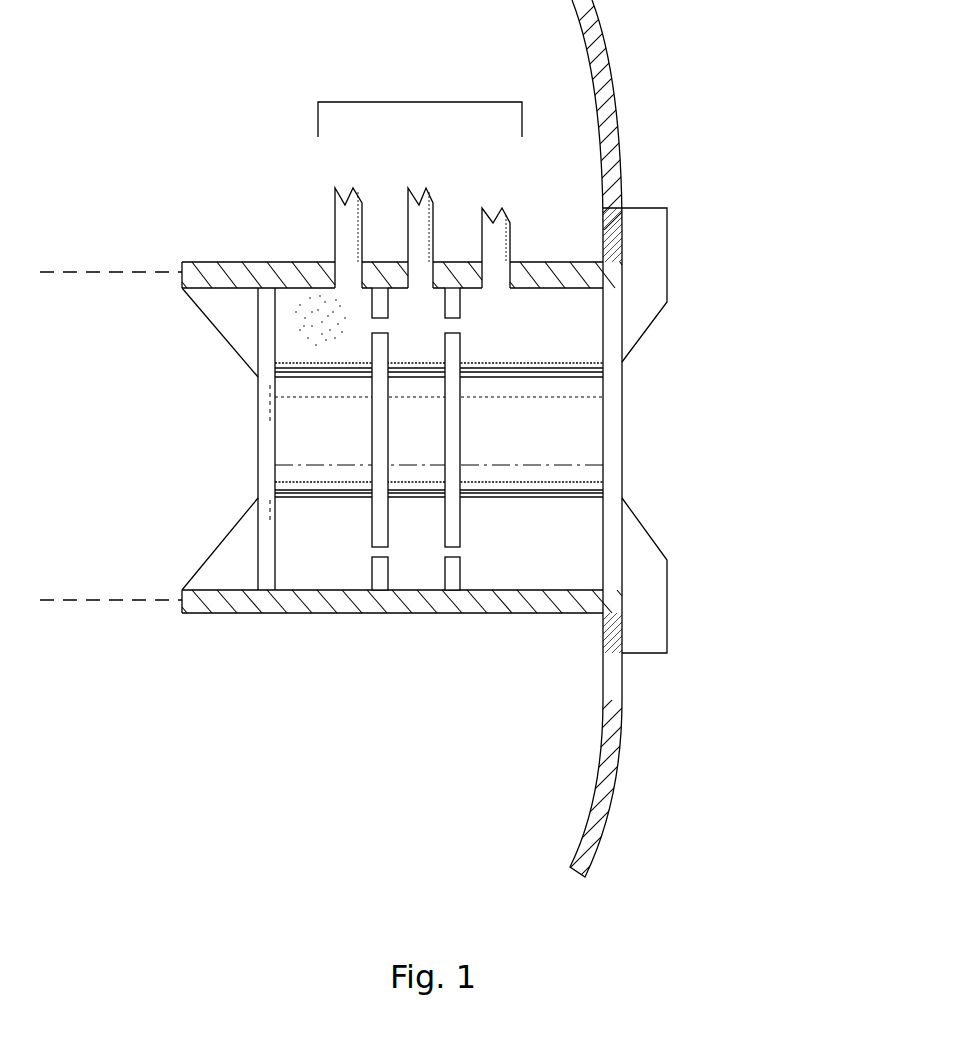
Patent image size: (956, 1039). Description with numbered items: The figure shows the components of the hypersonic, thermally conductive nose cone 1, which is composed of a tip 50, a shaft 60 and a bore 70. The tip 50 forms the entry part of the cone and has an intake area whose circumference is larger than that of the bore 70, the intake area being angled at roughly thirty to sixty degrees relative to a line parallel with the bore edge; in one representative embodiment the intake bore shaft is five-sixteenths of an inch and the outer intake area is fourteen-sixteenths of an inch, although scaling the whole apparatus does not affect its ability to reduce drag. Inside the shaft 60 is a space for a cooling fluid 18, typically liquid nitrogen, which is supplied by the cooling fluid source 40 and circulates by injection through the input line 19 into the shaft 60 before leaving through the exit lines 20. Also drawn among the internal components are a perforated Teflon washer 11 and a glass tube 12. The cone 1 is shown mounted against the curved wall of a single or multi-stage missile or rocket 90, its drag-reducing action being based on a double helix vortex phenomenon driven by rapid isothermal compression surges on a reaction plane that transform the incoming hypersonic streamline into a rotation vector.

The thermally conductive nose cone 1 is at (745, 256).
The perforated Teflon washer 11 is at (380, 533).
The glass tube 12 is at (267, 582).
The cooling fluid 18 is at (320, 325).
The input line 19 is at (433, 230).
The exit lines 20 is at (362, 230).
The cooling fluid source 40 is at (420, 88).
The tip 50 is at (645, 225).
The shaft 60 is at (422, 573).
The bore 70 is at (318, 445).
The missile or rocket 90 is at (615, 800).